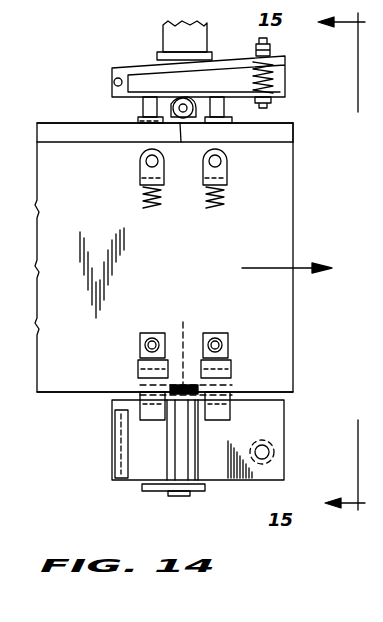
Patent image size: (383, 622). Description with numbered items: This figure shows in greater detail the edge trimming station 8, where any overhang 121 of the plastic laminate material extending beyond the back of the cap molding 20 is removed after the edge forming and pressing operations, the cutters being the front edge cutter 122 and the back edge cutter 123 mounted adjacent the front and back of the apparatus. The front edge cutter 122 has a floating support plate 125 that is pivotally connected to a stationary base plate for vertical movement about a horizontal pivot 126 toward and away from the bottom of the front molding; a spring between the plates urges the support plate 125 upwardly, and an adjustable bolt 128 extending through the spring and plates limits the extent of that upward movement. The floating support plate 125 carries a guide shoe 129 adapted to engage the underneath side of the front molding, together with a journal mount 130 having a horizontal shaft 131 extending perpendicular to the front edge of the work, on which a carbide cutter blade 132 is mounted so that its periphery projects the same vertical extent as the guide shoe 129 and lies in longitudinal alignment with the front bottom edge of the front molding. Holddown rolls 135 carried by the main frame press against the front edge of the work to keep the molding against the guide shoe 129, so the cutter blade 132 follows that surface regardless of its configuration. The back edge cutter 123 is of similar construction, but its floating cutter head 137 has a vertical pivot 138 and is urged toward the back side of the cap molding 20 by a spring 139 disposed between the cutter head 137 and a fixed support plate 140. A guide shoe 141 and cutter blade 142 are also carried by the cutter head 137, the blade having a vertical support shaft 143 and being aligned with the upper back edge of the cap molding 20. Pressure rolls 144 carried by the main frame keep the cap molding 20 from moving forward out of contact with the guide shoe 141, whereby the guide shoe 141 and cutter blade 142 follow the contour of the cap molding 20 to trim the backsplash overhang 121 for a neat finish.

The edge trimming station 8 is at (288, 127).
The cap molding 20 is at (296, 139).
The overhang 121 is at (56, 123).
The front edge cutter 122 is at (246, 392).
The back edge cutter 123 is at (136, 116).
The floating support plate 125 is at (226, 470).
The horizontal pivot 126 is at (115, 437).
The adjustable bolt 128 is at (270, 452).
The guide shoe 129 is at (230, 401).
The journal mount 130 is at (180, 462).
The horizontal shaft 131 is at (175, 415).
The carbide cutter blade 132 is at (185, 347).
The holddown rolls 135 is at (140, 362).
The floating cutter head 137 is at (281, 95).
The vertical pivot 138 is at (121, 68).
The spring 139 is at (278, 73).
The fixed support plate 140 is at (285, 58).
The guide shoe 141 is at (230, 121).
The cutter blade 142 is at (182, 100).
The vertical support shaft 143 is at (181, 142).
The pressure rolls 144 is at (140, 166).